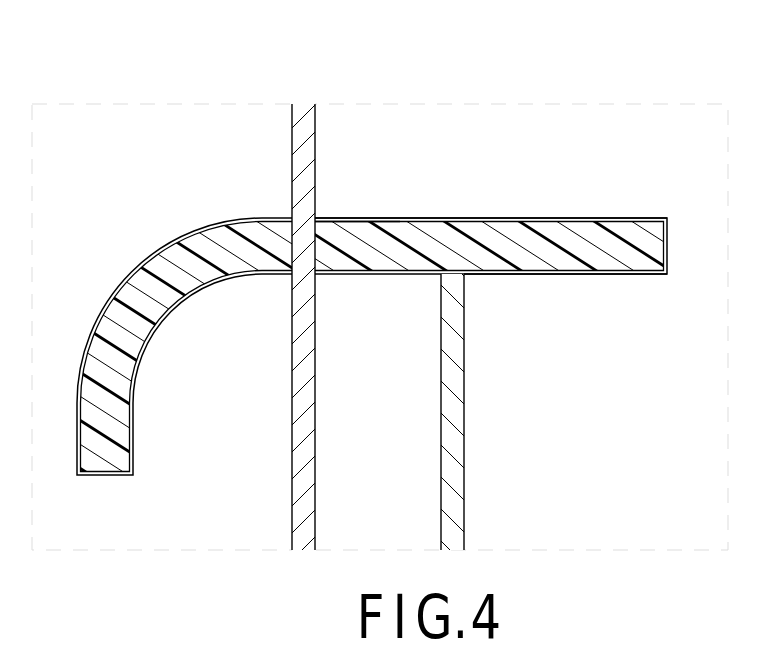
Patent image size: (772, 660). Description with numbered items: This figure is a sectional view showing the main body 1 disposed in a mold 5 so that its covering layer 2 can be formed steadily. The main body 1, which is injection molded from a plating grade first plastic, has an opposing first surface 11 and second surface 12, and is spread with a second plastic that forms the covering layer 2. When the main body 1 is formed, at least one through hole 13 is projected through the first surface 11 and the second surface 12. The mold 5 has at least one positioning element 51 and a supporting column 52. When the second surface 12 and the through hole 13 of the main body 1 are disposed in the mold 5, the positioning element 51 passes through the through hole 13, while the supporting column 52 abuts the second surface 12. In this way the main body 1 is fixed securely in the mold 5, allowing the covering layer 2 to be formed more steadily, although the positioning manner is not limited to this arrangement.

The main body 1 is at (520, 255).
The covering layer 2 is at (567, 218).
The mold 5 is at (678, 105).
The first surface 11 is at (625, 218).
The second surface 12 is at (612, 276).
The through hole 13 is at (317, 253).
The positioning element 51 is at (291, 502).
The supporting column 52 is at (465, 503).